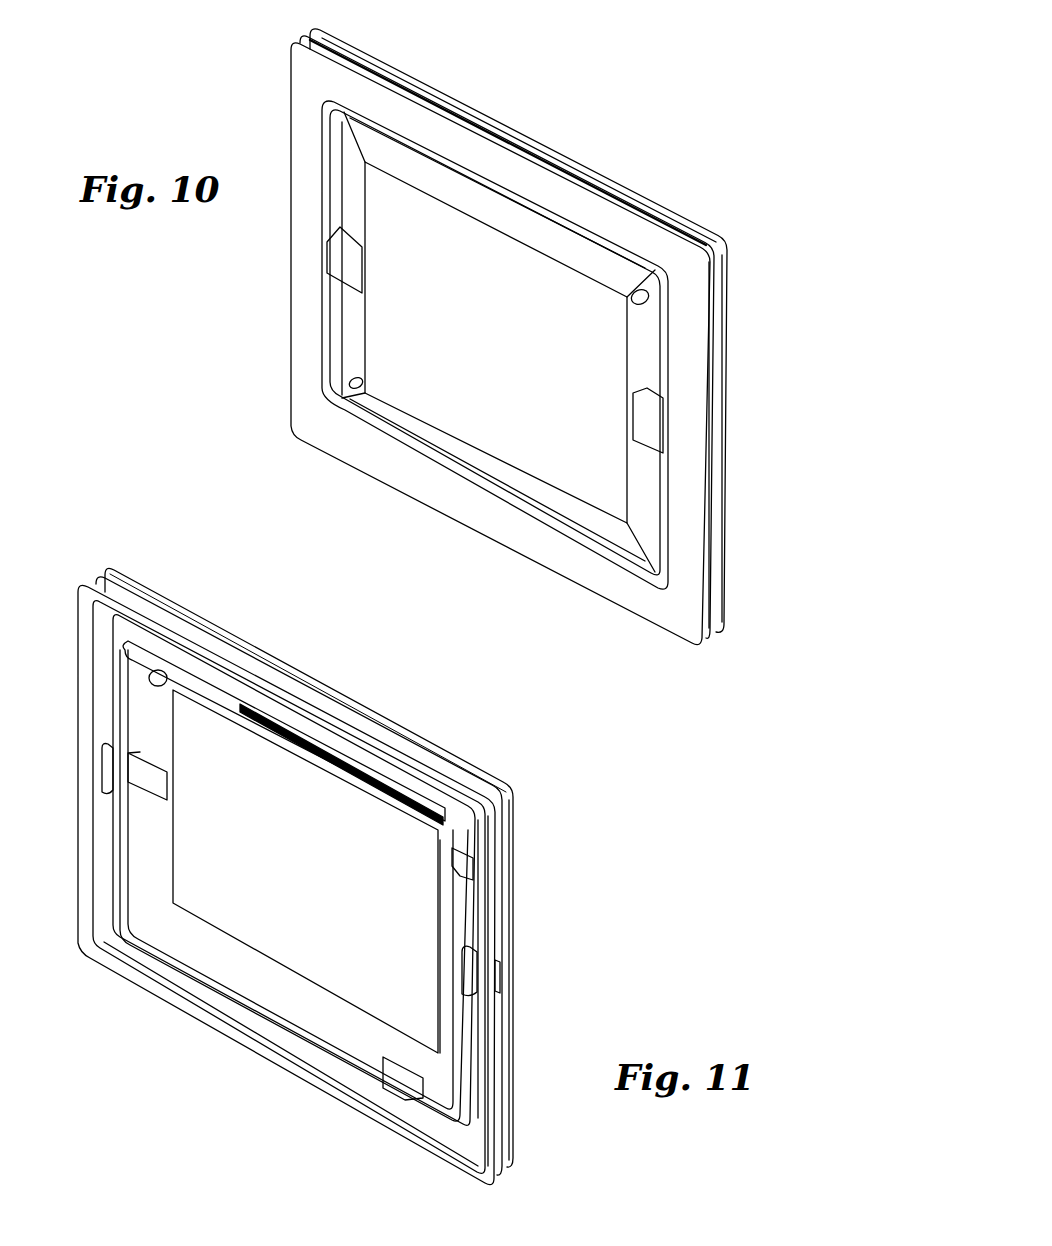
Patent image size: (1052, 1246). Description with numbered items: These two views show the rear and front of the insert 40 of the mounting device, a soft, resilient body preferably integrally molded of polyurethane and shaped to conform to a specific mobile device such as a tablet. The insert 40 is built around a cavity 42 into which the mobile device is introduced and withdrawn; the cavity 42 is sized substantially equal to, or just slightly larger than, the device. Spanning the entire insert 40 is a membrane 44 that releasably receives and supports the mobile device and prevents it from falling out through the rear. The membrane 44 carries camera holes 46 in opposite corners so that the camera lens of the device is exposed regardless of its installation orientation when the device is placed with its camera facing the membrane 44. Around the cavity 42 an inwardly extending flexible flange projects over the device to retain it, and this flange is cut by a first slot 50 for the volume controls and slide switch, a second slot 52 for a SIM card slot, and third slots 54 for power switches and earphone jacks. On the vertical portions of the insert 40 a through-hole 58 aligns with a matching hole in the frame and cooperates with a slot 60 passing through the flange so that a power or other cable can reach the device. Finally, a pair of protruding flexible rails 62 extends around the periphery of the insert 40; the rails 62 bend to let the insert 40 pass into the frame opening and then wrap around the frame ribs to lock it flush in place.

In FIG. 10, the insert 40 is at (552, 128).
In FIG. 11, the insert 40 is at (370, 687).
In FIG. 11, the cavity 42 is at (262, 980).
In FIG. 10, the membrane 44 is at (506, 356).
In FIG. 11, the membrane 44 is at (309, 881).
In FIG. 10, the camera hole 46 is at (640, 302).
In FIG. 11, the camera hole 46 is at (162, 690).
In FIG. 11, the first slot 50 is at (212, 680).
In FIG. 11, the second slot 52 is at (390, 1080).
In FIG. 11, the third slot 54 is at (465, 860).
In FIG. 11, the through-hole 58 is at (100, 770).
In FIG. 11, the slot 60 is at (152, 788).
In FIG. 10, the flexible rail 62 is at (686, 208).
In FIG. 11, the flexible rail 62 is at (104, 560).